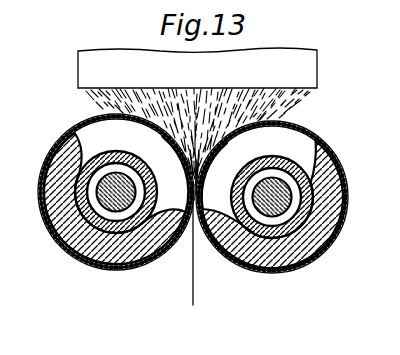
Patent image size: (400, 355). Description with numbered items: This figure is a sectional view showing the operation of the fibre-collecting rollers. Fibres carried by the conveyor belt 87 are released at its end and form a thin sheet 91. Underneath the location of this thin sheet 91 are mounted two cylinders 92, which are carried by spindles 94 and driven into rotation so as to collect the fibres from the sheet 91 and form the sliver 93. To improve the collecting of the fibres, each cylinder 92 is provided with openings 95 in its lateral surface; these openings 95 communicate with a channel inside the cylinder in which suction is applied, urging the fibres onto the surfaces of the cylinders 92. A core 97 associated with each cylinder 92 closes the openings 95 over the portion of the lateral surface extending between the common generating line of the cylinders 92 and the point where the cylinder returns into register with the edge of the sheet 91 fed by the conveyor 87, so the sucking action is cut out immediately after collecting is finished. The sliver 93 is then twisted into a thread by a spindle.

The conveyor belt 87 is at (318, 72).
The thin sheet 91 is at (288, 114).
The cylinders 92 is at (120, 266).
The sliver 93 is at (190, 283).
The spindles 94 is at (66, 245).
The openings 95 is at (302, 123).
The core 97 is at (45, 214).